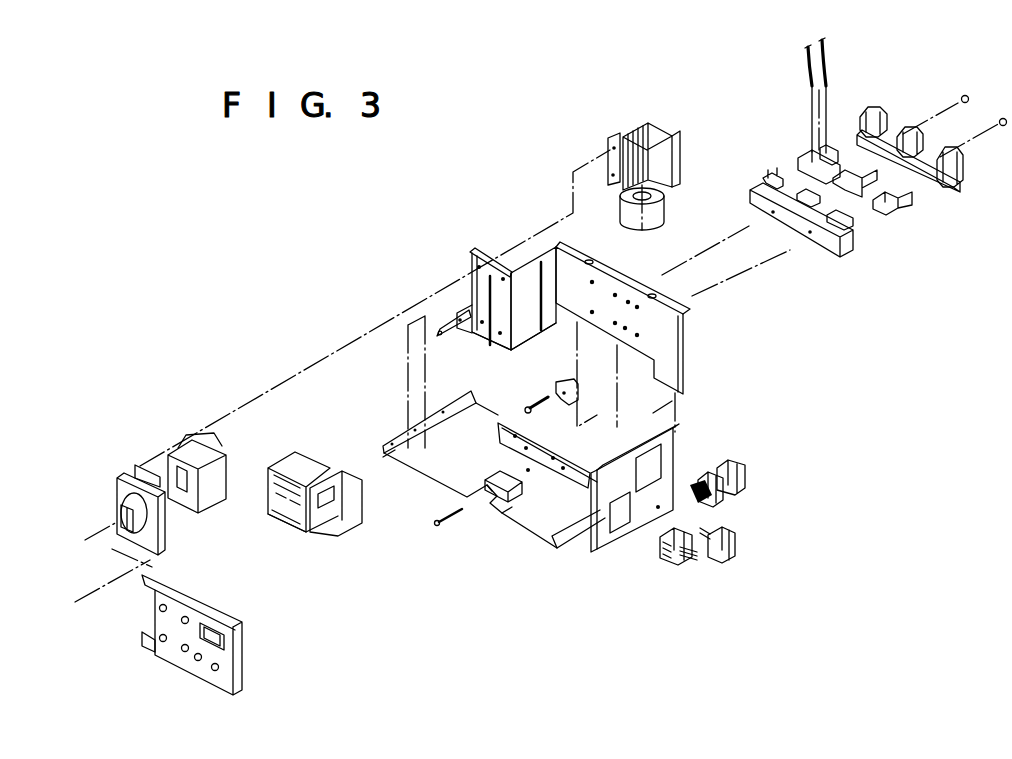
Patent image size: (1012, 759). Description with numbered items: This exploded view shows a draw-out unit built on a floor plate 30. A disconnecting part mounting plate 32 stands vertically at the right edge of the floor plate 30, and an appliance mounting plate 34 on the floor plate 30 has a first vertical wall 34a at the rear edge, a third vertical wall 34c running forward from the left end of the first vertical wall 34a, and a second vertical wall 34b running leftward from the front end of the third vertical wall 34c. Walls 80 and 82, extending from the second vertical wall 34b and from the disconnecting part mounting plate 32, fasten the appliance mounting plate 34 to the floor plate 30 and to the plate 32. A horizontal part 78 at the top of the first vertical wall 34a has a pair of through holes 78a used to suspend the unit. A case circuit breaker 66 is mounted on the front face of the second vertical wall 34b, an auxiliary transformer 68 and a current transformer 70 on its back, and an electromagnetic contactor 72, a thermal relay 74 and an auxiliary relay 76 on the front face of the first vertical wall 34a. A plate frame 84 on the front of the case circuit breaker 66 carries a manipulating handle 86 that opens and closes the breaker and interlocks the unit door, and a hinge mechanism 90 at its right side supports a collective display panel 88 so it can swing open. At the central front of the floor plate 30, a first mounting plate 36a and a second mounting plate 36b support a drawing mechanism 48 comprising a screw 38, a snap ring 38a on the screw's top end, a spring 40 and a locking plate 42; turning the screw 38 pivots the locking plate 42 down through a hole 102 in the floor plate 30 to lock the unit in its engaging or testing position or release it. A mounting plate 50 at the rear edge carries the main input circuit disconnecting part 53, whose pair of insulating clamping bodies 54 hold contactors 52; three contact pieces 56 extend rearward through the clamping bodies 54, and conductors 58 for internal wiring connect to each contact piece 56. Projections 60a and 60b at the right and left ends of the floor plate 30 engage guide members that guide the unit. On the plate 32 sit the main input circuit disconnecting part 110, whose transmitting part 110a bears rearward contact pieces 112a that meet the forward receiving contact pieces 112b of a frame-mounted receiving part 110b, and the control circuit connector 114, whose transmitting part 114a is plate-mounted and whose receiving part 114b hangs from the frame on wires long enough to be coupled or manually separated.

The floor plate 30 is at (494, 493).
The disconnecting part mounting plate 32 is at (652, 478).
The appliance mounting plate 34 is at (604, 300).
The first vertical wall 34a is at (680, 358).
The second vertical wall 34b is at (494, 340).
The third vertical wall 34c is at (531, 275).
The first mounting plate 36a is at (492, 502).
The second mounting plate 36b is at (520, 520).
The screw 38 is at (440, 530).
The snap ring 38a is at (531, 473).
The spring 40 is at (529, 407).
The locking plate 42 is at (579, 392).
The drawing mechanism 48 is at (457, 526).
The mounting plate 50 is at (553, 461).
The contactors 52 is at (880, 208).
The main input circuit disconnecting part 53 is at (834, 115).
The clamping bodies 54 is at (847, 256).
The contact pieces 56 is at (905, 209).
The conductors 58 is at (823, 40).
The projection 60a is at (582, 550).
The projection 60b is at (383, 444).
The case circuit breaker 66 is at (203, 430).
The auxiliary transformer 68 is at (667, 133).
The current transformer 70 is at (665, 207).
The electromagnetic contactor 72 is at (317, 495).
The thermal relay 74 is at (300, 534).
The auxiliary relay 76 is at (345, 470).
The horizontal part 78 is at (686, 309).
The through holes 78a is at (592, 264).
The wall 80 is at (455, 322).
The wall 82 is at (674, 426).
The plate frame 84 is at (120, 521).
The manipulating handle 86 is at (120, 540).
The collective display panel 88 is at (187, 663).
The hinge mechanism 90 is at (153, 563).
The hole 102 is at (488, 476).
The main input circuit disconnecting part 110 is at (718, 556).
The transmitting part 110a is at (670, 565).
The receiving part 110b is at (737, 546).
The contact pieces 112a is at (692, 561).
The receiving contact pieces 112b is at (711, 540).
The control circuit connector 114 is at (756, 476).
The transmitting part 114a is at (723, 498).
The receiving part 114b is at (755, 475).